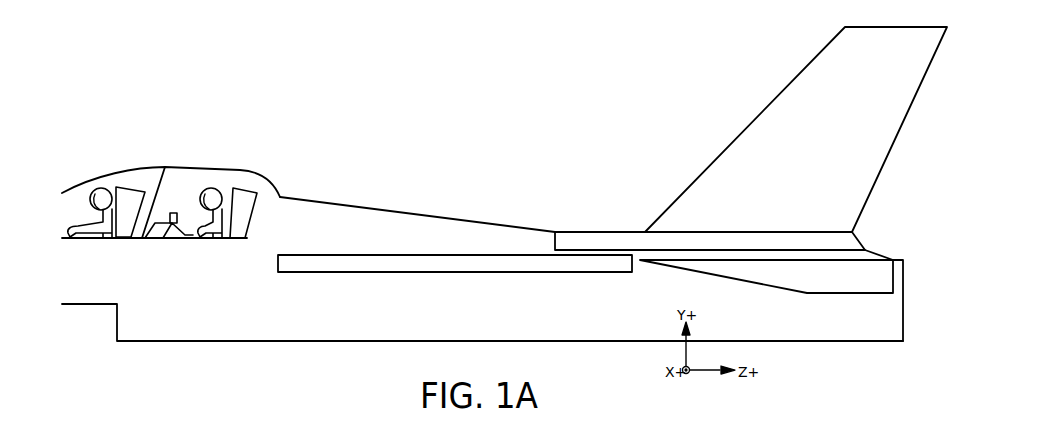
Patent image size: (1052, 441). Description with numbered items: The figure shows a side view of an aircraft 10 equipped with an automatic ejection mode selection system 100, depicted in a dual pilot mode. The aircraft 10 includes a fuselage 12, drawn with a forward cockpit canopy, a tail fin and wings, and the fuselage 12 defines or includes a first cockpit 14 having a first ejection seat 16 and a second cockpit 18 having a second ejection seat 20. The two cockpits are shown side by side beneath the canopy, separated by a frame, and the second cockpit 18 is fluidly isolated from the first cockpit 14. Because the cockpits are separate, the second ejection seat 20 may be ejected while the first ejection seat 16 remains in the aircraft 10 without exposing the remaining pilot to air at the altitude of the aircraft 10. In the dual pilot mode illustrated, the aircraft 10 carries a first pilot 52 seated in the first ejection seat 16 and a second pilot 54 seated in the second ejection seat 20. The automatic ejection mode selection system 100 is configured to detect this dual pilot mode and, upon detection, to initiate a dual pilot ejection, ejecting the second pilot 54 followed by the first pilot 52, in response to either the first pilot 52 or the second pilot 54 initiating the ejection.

The automatic ejection mode selection system 100 is at (97, 107).
The aircraft 10 is at (427, 159).
The fuselage 12 is at (577, 231).
The first cockpit 14 is at (147, 168).
The first ejection seat 16 is at (122, 190).
The second cockpit 18 is at (195, 180).
The second ejection seat 20 is at (250, 187).
The first pilot 52 is at (103, 238).
The second pilot 54 is at (222, 238).